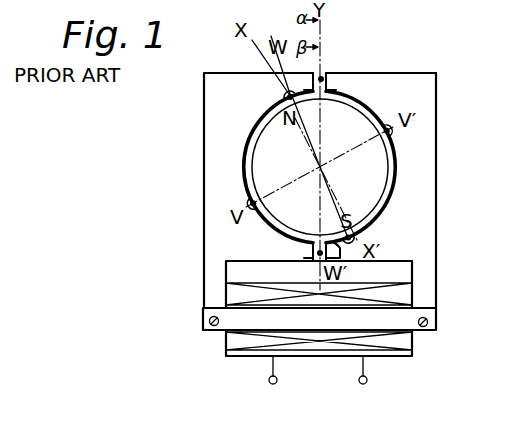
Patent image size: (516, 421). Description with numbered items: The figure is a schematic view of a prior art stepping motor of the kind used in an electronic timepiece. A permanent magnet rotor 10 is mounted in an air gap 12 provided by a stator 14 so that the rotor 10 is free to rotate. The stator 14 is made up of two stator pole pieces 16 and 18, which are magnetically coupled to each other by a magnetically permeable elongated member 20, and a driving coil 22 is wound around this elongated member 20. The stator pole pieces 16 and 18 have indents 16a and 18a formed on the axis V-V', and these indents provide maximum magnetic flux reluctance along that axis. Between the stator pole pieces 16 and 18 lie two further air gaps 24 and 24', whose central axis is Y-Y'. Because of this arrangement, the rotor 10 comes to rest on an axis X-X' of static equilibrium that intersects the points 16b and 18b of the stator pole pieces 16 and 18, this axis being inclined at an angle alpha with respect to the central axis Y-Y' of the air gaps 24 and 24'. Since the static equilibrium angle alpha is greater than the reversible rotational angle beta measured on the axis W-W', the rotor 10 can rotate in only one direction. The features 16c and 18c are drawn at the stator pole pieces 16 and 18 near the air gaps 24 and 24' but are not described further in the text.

The permanent magnet rotor 10 is at (383, 178).
The air gap 12 is at (373, 108).
The stator 14 is at (436, 83).
The stator pole piece 16 is at (214, 236).
The indent 16a is at (247, 203).
The point of stator pole piece 16b is at (287, 98).
The first yoke connecting tab 16c is at (323, 78).
The stator pole piece 18 is at (436, 216).
The indent 18a is at (394, 131).
The point of stator pole piece 18b is at (380, 236).
The second yoke connecting tab 18c is at (342, 262).
The magnetically permeable elongated member 20 is at (206, 312).
The driving coil 22 is at (408, 346).
The air gap 24 is at (365, 61).
The air gap 24' is at (235, 267).